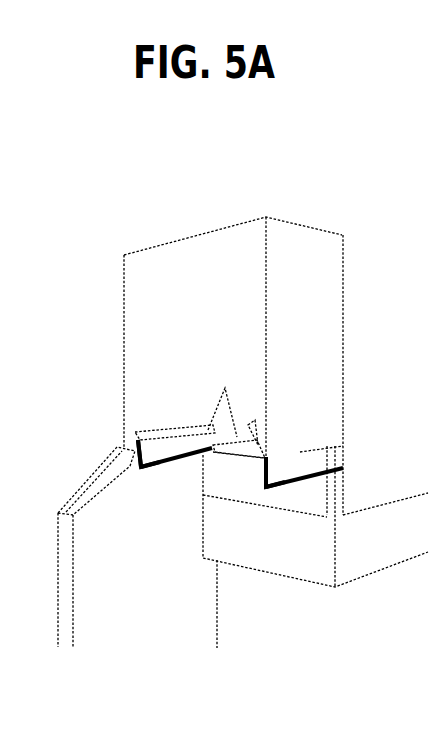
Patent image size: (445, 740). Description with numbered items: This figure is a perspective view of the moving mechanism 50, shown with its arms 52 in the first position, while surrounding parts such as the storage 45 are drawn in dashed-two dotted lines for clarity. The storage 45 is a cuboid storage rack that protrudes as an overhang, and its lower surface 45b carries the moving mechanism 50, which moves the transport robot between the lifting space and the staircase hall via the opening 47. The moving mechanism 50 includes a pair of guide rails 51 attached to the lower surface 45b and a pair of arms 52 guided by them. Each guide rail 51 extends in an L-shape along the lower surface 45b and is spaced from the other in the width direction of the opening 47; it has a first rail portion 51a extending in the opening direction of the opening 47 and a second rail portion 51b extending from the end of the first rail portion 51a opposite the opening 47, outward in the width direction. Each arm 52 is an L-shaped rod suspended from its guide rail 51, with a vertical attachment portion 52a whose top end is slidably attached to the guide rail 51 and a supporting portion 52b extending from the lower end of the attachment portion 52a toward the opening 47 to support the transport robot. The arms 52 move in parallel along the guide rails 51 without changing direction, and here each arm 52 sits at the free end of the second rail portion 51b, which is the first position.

The storage 45 is at (168, 240).
The lower surface of the storage 45b is at (343, 447).
The opening 47 is at (283, 478).
The moving mechanism 50 is at (170, 437).
The guide rail 51 is at (212, 434).
The first rail portion 51a is at (208, 430).
The second rail portion 51b is at (138, 438).
The arm 52 is at (151, 547).
The attachment portion 52a is at (112, 456).
The supporting portion 52b is at (163, 467).